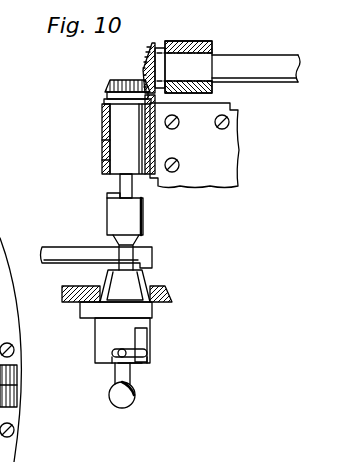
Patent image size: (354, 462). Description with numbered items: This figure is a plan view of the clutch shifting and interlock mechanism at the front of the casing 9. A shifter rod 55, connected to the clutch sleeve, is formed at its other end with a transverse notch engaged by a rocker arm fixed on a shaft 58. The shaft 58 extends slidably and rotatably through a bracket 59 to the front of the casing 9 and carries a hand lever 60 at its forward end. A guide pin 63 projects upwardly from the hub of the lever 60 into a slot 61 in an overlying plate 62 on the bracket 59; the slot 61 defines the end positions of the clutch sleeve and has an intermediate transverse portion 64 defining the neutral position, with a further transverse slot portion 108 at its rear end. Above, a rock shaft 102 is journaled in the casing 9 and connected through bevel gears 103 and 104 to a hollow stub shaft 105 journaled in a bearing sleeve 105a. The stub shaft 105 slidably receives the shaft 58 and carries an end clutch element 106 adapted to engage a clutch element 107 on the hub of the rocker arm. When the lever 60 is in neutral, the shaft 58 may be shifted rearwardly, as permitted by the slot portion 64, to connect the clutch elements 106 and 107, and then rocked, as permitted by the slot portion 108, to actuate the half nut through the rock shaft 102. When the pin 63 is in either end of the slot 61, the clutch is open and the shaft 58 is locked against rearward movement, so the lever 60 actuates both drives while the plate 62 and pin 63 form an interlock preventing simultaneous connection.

The rock shaft 102 is at (262, 66).
The bevel gear 103 is at (149, 50).
The bevel gear 104 is at (125, 80).
The hollow stub shaft 105 is at (117, 123).
The bearing sleeve 105a is at (104, 153).
The clutch element 106 is at (118, 185).
The clutch element 107 is at (110, 199).
The shifter rod 55 is at (77, 254).
The shaft 58 is at (108, 275).
The casing 9 is at (169, 291).
The bracket 59 is at (152, 310).
The plate 62 is at (97, 328).
The transverse slot portion 108 is at (147, 330).
The intermediate transverse slot portion 64 is at (120, 350).
The slot 61 is at (147, 353).
The guide pin 63 is at (135, 362).
The hand lever 60 is at (115, 378).